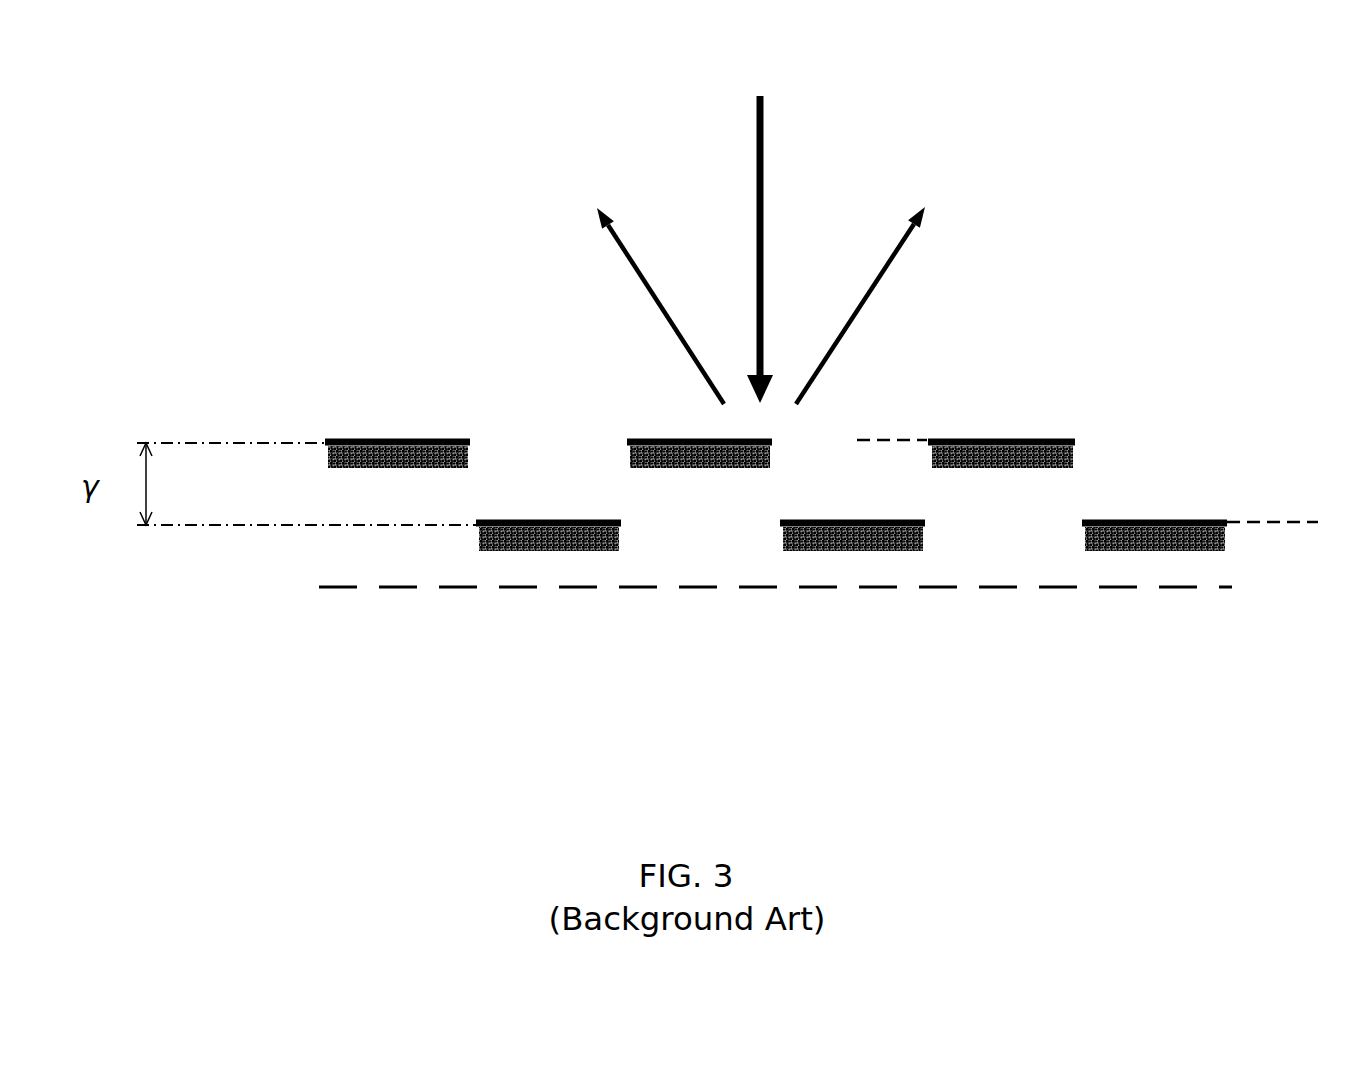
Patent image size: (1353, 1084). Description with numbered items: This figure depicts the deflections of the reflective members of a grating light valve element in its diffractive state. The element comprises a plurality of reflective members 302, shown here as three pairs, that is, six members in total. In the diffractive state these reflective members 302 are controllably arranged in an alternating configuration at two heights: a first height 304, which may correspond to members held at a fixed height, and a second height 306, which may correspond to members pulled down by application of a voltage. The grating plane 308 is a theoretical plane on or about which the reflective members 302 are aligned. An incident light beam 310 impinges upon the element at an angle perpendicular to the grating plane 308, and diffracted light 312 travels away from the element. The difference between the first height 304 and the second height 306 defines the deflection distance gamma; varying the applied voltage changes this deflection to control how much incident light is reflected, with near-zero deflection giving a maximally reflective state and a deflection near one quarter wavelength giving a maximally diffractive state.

The reflective members 302 is at (400, 437).
The first height 304 is at (872, 440).
The second height 306 is at (1300, 522).
The grating plane 308 is at (1080, 588).
The incident light beam 310 is at (753, 215).
The diffracted light 312 is at (888, 268).